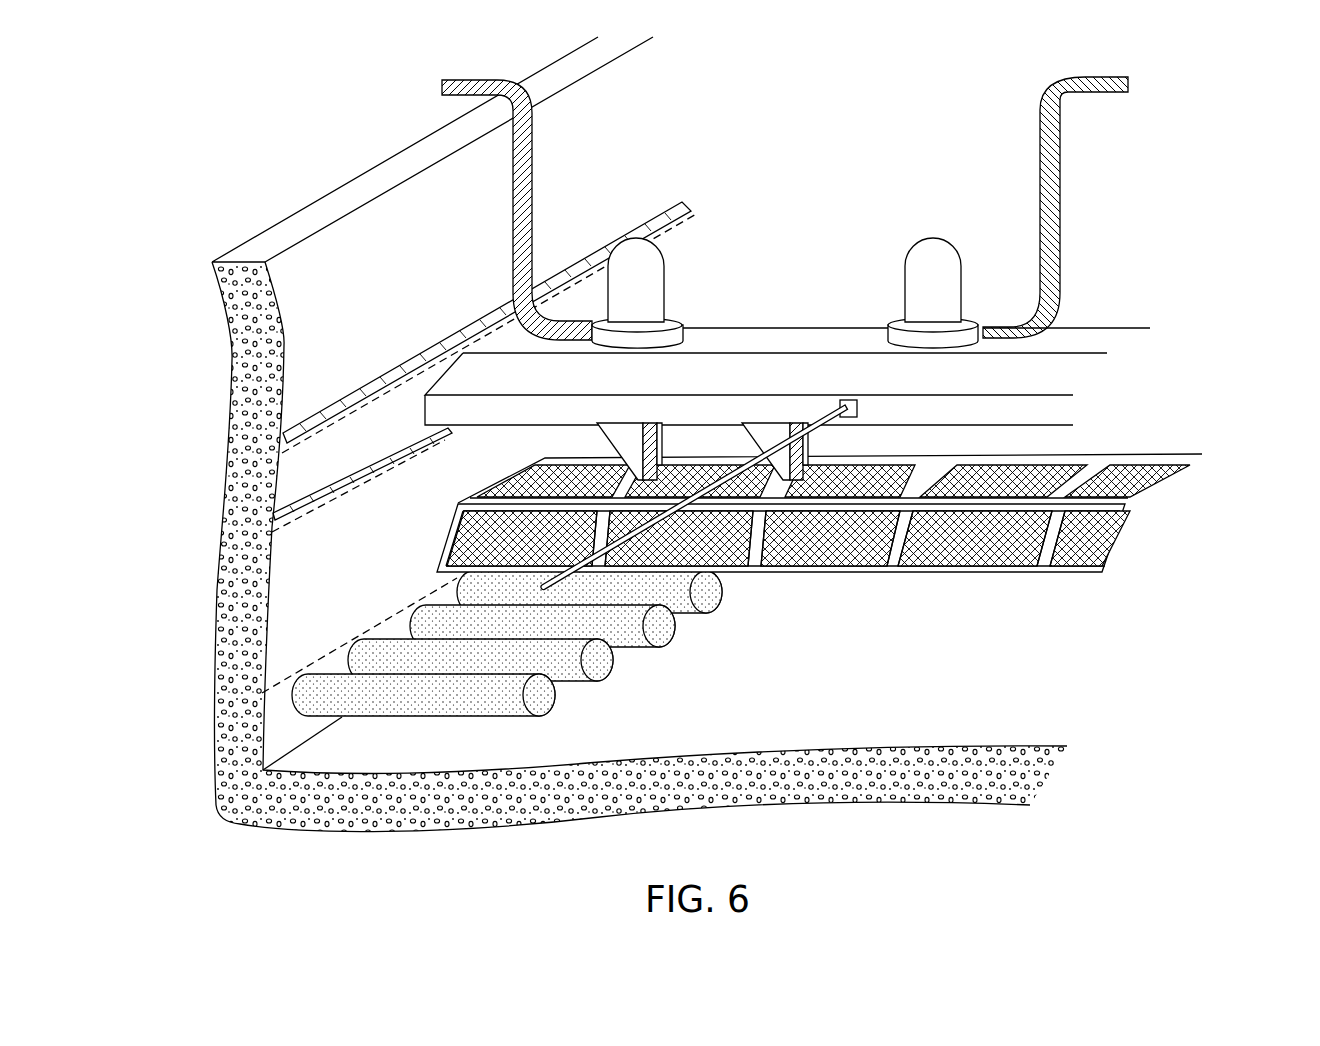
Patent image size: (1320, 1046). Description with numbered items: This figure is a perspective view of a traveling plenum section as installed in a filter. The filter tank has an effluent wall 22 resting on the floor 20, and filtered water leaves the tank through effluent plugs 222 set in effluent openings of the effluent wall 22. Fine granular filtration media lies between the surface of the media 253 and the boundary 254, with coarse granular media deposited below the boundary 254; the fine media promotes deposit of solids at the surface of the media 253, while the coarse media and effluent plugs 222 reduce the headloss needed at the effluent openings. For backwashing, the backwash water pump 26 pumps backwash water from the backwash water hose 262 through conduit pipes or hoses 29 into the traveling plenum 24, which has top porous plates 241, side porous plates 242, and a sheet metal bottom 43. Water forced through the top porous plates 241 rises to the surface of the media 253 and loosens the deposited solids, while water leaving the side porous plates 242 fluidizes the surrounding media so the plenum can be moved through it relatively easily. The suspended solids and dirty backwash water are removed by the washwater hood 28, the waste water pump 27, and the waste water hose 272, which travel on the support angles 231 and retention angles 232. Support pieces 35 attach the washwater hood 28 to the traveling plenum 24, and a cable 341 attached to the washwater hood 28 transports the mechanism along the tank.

The ground / concrete floor 20 is at (882, 790).
The effluent wall 22 is at (300, 227).
The effluent plugs 222 is at (660, 625).
The support angles 231 is at (348, 468).
The retention angles 232 is at (350, 393).
The traveling plenum 24 is at (892, 572).
The top porous plates 241 is at (1160, 475).
The side porous plates 242 is at (1107, 538).
The surface of the media 253 is at (363, 482).
The boundary 254 is at (333, 650).
The backwash water pump 26 is at (650, 295).
The backwash water hose 262 is at (533, 143).
The waste water pump 27 is at (945, 294).
The waste water hose 272 is at (1060, 245).
The washwater hood 28 is at (760, 385).
The conduit pipes or hoses 29 is at (650, 478).
The cable 341 is at (777, 438).
The support pieces 35 is at (597, 428).
The sheet metal bottom 43 is at (1043, 573).